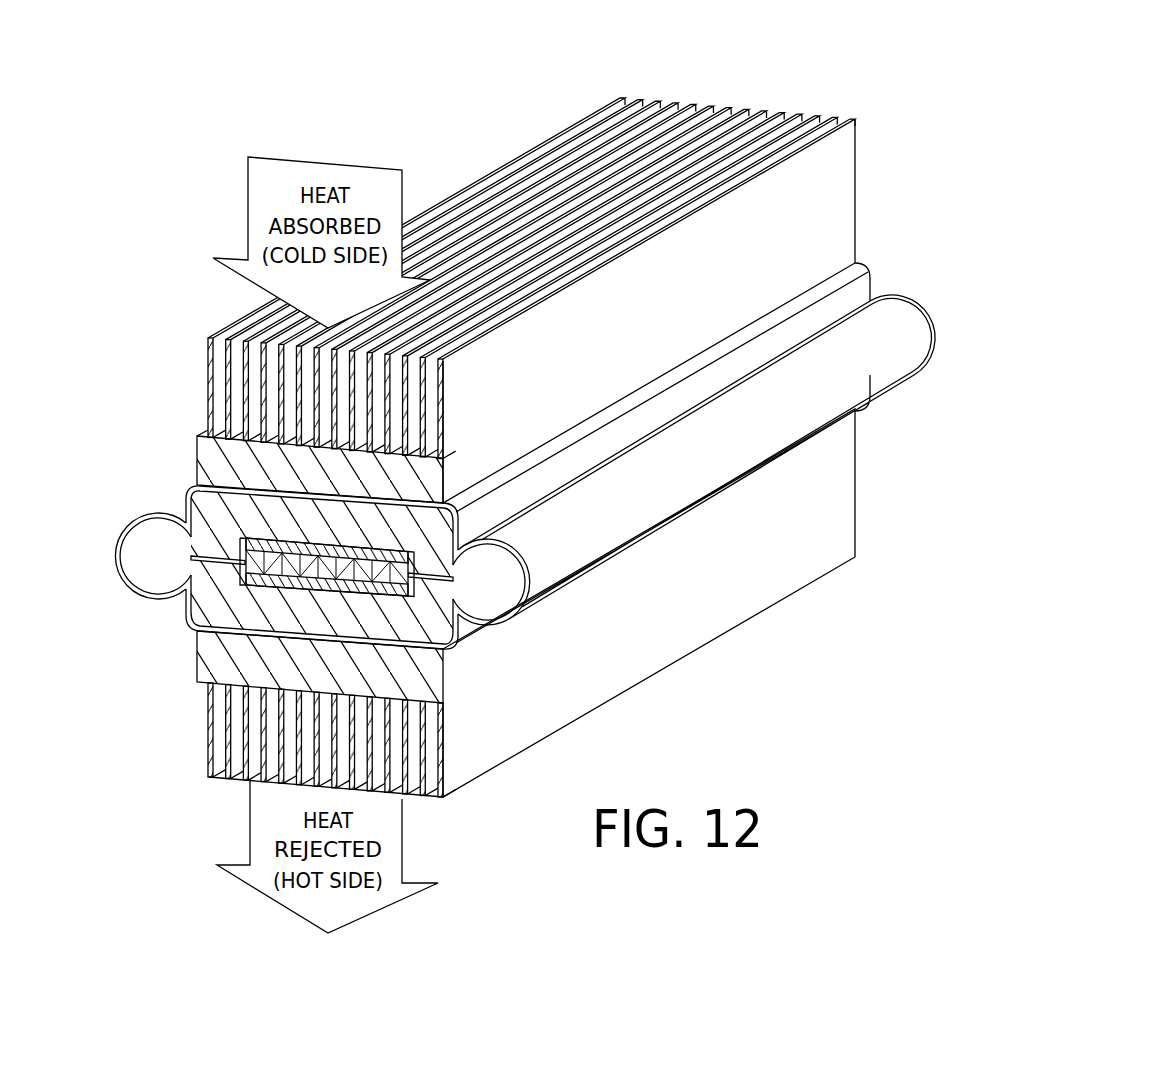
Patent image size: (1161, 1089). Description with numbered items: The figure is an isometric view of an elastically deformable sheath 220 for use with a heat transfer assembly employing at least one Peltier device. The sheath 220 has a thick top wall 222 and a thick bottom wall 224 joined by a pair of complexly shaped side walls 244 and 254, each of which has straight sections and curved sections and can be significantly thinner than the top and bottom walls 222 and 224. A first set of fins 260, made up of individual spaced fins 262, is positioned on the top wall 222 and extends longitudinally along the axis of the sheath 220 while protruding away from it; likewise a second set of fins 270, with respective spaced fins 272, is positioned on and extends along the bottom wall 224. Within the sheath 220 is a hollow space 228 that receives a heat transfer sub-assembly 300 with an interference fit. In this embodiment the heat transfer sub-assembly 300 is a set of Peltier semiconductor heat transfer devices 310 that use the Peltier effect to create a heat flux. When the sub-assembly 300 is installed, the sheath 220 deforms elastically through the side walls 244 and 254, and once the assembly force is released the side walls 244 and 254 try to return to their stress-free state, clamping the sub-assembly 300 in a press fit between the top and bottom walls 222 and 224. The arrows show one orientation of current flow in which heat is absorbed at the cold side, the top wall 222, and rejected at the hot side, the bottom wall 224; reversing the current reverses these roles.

The elastically deformable sheath 220 is at (526, 436).
The top wall 222 is at (210, 453).
The bottom wall 224 is at (222, 660).
The hollow space 228 is at (331, 585).
The side wall 244 is at (872, 383).
The side wall 254 is at (127, 533).
The first set of fins 260 is at (491, 271).
The fins 262 is at (545, 140).
The second set of fins 270 is at (489, 618).
The fins 272 is at (210, 752).
The heat transfer sub-assembly 300 is at (187, 540).
The Peltier semiconductor heat transfer devices 310 is at (410, 593).